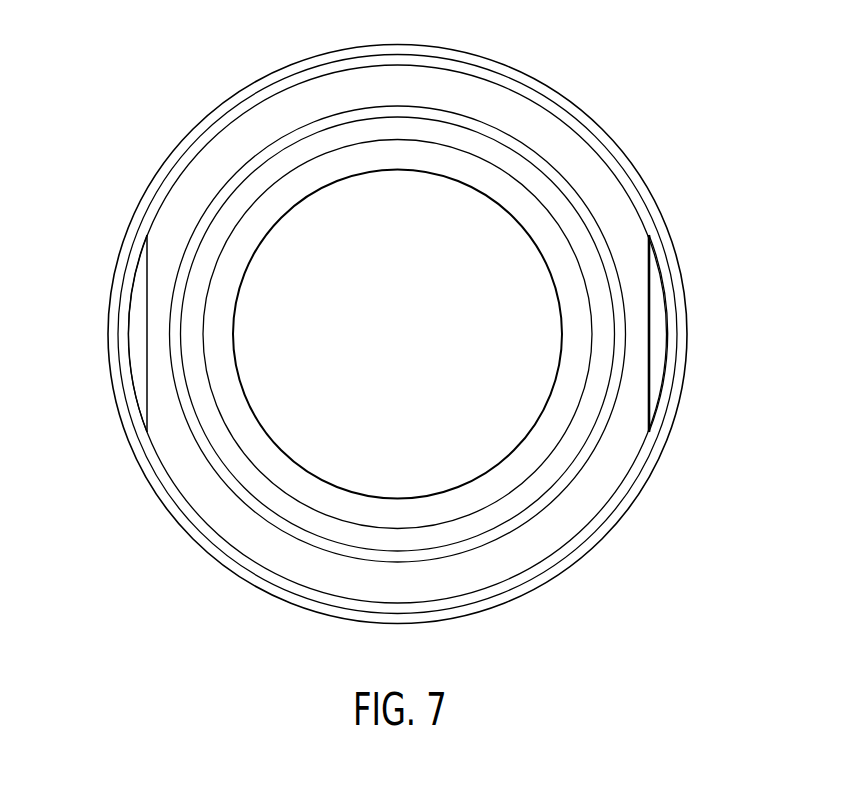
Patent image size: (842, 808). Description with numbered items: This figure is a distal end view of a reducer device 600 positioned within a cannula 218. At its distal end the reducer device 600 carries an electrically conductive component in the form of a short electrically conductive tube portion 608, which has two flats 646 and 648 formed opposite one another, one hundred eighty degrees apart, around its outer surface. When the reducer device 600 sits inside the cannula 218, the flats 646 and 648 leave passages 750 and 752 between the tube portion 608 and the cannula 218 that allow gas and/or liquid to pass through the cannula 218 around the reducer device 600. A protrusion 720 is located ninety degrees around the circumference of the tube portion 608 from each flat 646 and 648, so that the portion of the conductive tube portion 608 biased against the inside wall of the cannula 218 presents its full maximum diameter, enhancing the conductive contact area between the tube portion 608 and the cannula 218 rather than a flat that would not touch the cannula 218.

The reducer device 600 is at (450, 232).
The cannula 218 is at (680, 146).
The protrusion 720 is at (465, 27).
The electrically conductive tube portion 608 is at (610, 565).
The flat 646 is at (705, 287).
The flat 648 is at (145, 295).
The passage 750 is at (712, 348).
The passage 752 is at (137, 360).